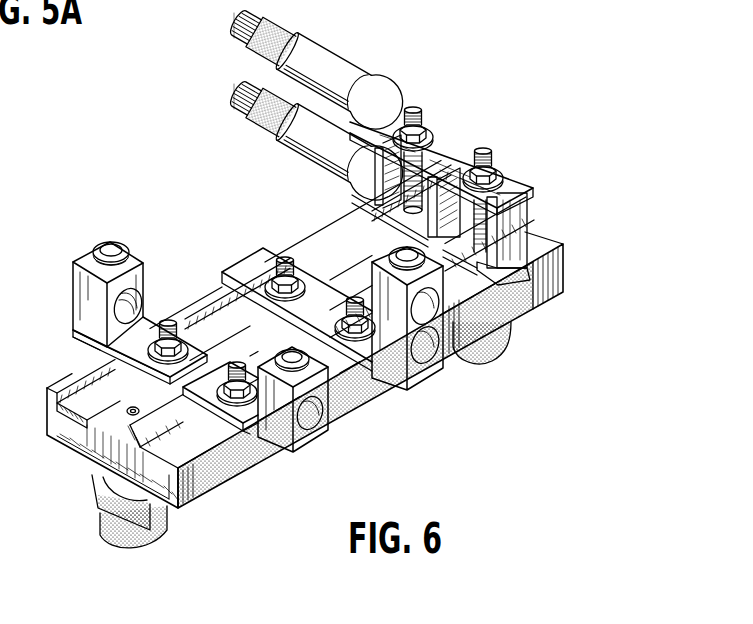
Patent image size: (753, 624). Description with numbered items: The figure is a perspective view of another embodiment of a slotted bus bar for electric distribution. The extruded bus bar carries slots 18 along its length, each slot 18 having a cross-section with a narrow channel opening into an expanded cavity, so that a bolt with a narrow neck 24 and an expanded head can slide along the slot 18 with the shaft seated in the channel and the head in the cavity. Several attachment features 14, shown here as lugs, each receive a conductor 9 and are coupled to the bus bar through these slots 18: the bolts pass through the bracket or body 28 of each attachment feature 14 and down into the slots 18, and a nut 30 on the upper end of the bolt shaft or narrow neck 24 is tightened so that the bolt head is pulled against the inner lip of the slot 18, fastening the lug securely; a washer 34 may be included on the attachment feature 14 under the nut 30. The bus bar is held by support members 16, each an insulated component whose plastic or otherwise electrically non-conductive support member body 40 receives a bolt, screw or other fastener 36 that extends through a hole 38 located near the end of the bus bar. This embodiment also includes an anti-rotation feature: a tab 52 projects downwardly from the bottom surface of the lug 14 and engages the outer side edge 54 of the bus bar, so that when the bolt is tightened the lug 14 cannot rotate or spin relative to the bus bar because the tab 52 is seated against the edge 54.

The conductor 9 is at (230, 32).
The attachment feature 14 is at (387, 64).
The support member 16 is at (112, 558).
The slot 18 is at (324, 250).
The narrow neck 24 is at (167, 323).
The bracket or body 28 is at (68, 302).
The nut 30 is at (206, 356).
The washer 34 is at (205, 357).
The fastener 36 is at (138, 410).
The hole 38 is at (105, 410).
The support member body 40 is at (92, 497).
The tab 52 is at (103, 347).
The edge 54 is at (47, 388).